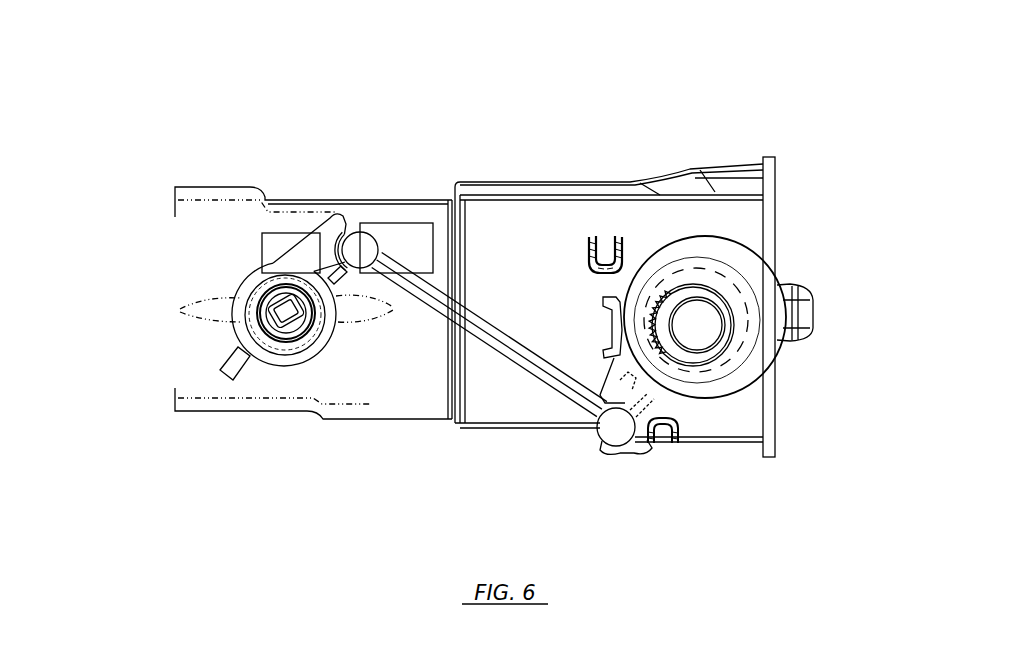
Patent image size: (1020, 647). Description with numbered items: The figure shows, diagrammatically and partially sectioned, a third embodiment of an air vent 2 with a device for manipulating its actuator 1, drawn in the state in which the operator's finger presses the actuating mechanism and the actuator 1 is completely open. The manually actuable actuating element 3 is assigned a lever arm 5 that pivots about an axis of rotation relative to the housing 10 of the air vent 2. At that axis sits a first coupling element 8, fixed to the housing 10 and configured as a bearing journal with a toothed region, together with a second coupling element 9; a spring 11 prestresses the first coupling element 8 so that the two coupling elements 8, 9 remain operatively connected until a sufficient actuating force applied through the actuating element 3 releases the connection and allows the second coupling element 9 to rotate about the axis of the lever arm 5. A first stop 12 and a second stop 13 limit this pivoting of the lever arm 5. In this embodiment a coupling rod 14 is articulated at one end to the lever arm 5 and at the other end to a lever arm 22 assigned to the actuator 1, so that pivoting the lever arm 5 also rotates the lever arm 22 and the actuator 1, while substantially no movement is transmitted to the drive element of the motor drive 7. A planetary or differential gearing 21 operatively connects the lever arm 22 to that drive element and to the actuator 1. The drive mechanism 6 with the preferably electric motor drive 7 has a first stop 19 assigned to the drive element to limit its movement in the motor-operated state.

The actuator 1 is at (205, 306).
The air vent 2 is at (804, 201).
The actuating element 3 is at (728, 265).
The lever arm of the actuating element 5 is at (637, 392).
The drive mechanism 6 is at (366, 212).
The motor drive 7 is at (276, 246).
The first coupling element 8 is at (717, 350).
The second coupling element 9 is at (693, 370).
The housing 10 is at (195, 404).
The spring 11 is at (616, 305).
The first stop 12 is at (666, 432).
The second stop 13 is at (605, 258).
The coupling rod 14 is at (528, 355).
The first stop 19 is at (236, 380).
The planetary or differential gearing 21 is at (293, 367).
The lever arm of the actuator 22 is at (298, 270).